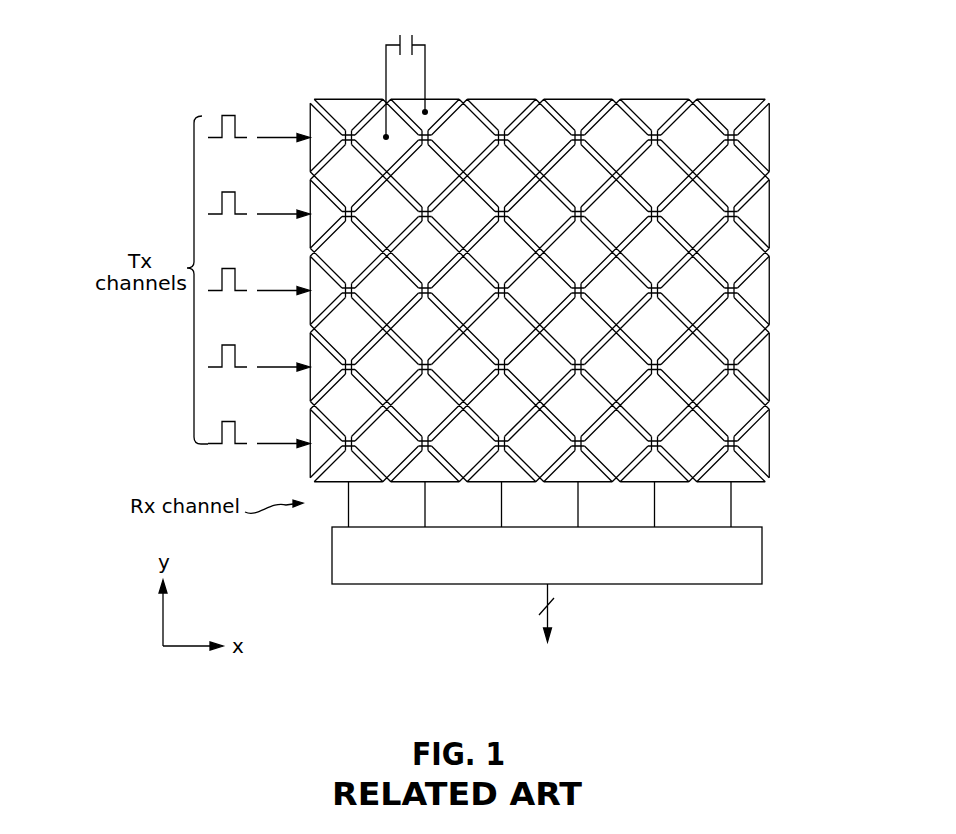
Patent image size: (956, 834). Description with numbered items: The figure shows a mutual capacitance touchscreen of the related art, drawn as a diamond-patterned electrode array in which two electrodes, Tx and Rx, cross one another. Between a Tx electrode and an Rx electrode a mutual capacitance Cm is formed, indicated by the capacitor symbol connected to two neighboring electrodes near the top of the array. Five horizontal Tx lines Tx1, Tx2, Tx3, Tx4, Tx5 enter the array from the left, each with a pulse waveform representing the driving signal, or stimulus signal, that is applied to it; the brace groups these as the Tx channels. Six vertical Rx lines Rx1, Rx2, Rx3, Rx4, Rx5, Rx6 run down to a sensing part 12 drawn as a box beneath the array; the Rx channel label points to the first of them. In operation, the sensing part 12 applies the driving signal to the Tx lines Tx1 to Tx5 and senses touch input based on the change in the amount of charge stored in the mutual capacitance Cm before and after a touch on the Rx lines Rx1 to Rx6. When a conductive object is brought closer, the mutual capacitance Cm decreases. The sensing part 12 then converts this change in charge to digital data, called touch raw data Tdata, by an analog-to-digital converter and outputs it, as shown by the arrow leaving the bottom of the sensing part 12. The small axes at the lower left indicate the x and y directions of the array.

The sensing part 12 is at (762, 556).
The mutual capacitance Cm is at (405, 76).
The Tx line Tx1 is at (259, 129).
The Tx line Tx2 is at (259, 205).
The Tx line Tx3 is at (259, 282).
The Tx line Tx4 is at (259, 358).
The Tx line Tx5 is at (259, 435).
The Rx line Rx1 is at (330, 504).
The Rx line Rx2 is at (407, 504).
The Rx line Rx3 is at (483, 504).
The Rx line Rx4 is at (560, 504).
The Rx line Rx5 is at (636, 504).
The Rx line Rx6 is at (713, 504).
The touch raw data Tdata is at (546, 626).